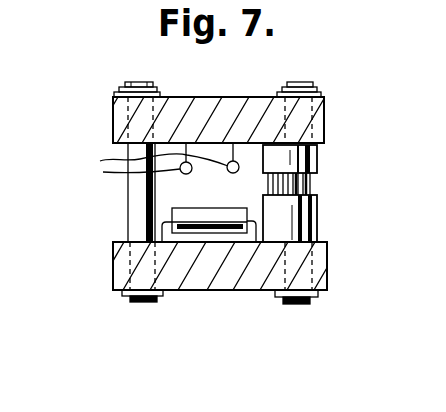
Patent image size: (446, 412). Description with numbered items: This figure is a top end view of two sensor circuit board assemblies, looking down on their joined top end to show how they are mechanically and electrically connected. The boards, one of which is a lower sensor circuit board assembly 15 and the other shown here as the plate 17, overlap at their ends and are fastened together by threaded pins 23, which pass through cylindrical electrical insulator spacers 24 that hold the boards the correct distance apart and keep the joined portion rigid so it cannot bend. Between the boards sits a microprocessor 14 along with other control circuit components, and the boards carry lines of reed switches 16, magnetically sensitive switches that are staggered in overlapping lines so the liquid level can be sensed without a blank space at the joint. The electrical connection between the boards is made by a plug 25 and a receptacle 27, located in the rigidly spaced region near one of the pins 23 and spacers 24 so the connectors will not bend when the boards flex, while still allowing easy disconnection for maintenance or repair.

The microprocessor 14 is at (170, 221).
The lower sensor circuit board assembly 15 is at (217, 110).
The reed switches 16 is at (155, 160).
The lower plate 17 is at (323, 267).
The threaded pins 23 is at (127, 85).
The cylindrical electrical insulator spacers 24 is at (128, 198).
The plug connector 25 is at (317, 162).
The receptacle connector 27 is at (314, 225).